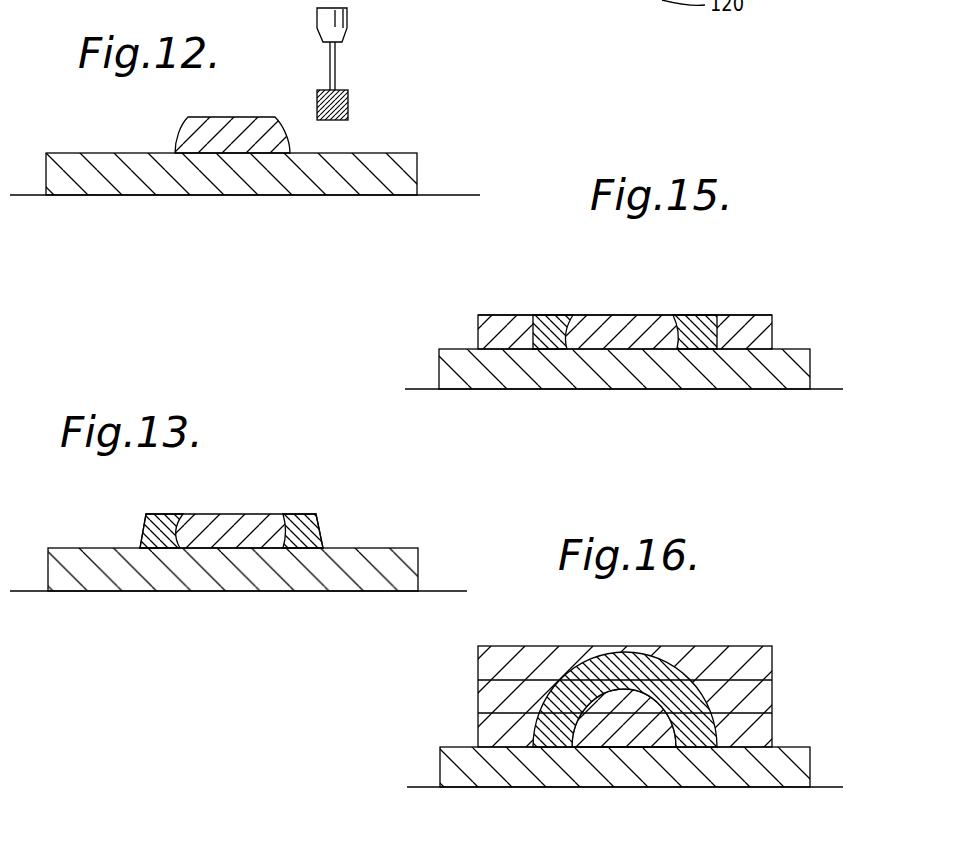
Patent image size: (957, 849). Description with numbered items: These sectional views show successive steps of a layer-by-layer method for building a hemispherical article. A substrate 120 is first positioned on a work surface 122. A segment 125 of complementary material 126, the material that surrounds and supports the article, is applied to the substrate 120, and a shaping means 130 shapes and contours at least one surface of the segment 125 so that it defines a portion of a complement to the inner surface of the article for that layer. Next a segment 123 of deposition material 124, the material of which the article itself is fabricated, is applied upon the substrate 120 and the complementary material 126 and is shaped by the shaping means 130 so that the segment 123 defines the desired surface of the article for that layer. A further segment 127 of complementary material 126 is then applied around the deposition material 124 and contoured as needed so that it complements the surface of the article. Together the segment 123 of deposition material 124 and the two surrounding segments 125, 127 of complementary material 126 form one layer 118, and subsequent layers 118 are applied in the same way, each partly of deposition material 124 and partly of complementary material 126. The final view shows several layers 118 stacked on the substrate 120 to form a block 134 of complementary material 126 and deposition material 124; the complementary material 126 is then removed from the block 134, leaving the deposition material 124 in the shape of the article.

In FIG. 15, the layer 118 is at (452, 328).
In FIG. 12, the substrate 120 is at (182, 175).
In FIG. 13, the substrate 120 is at (220, 573).
In FIG. 15, the substrate 120 is at (613, 370).
In FIG. 16, the substrate 120 is at (473, 767).
In FIG. 12, the work surface 122 is at (456, 194).
In FIG. 13, the work surface 122 is at (448, 591).
In FIG. 15, the work surface 122 is at (418, 389).
In FIG. 16, the work surface 122 is at (422, 787).
In FIG. 13, the segment of deposition material 123 is at (322, 528).
In FIG. 15, the segment of deposition material 123 is at (688, 320).
In FIG. 13, the deposition material 124 is at (148, 533).
In FIG. 15, the deposition material 124 is at (553, 325).
In FIG. 16, the deposition material 124 is at (617, 668).
In FIG. 12, the segment of complementary material 125 is at (263, 143).
In FIG. 13, the segment of complementary material 125 is at (240, 520).
In FIG. 15, the segment of complementary material 125 is at (647, 323).
In FIG. 12, the complementary material 126 is at (192, 128).
In FIG. 13, the complementary material 126 is at (208, 515).
In FIG. 15, the complementary material 126 is at (600, 327).
In FIG. 16, the complementary material 126 is at (740, 658).
In FIG. 15, the segment of complementary material 127 is at (500, 322).
In FIG. 12, the shaping means 130 is at (347, 21).
In FIG. 16, the block 134 is at (688, 628).